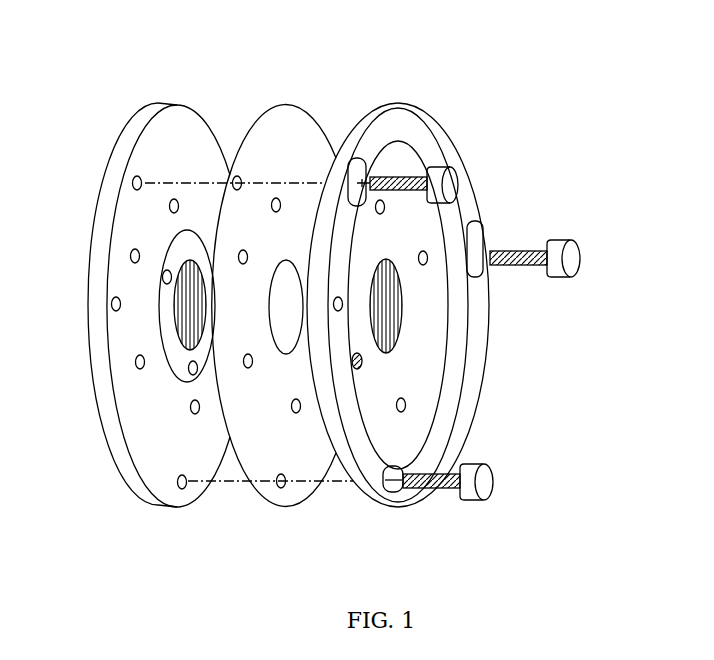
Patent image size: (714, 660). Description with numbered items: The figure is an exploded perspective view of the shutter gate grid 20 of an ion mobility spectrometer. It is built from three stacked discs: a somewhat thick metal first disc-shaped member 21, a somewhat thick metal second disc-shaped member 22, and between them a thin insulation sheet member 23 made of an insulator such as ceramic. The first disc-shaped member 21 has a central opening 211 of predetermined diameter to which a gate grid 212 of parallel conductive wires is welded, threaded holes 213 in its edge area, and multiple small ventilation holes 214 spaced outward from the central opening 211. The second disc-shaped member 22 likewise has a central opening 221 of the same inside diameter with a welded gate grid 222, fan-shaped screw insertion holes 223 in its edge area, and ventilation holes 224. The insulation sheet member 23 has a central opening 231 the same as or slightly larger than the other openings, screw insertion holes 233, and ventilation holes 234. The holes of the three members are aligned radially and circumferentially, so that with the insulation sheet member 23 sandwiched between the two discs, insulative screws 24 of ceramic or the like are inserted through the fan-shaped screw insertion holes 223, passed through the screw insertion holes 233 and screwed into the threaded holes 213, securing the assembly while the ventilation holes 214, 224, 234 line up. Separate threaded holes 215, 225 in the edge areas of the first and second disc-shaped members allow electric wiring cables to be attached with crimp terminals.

The shutter gate grid 20 is at (572, 91).
The first disc-shaped member 21 is at (147, 117).
The central opening 211 is at (174, 298).
The gate grid 212 is at (173, 317).
The threaded holes 213 is at (133, 181).
The ventilation holes 214 is at (137, 368).
The threaded hole for electric wiring 215 is at (111, 305).
The second disc-shaped member 22 is at (448, 127).
The central opening 221 is at (405, 292).
The gate grid 222 is at (403, 303).
The fan-shaped screw insertion holes 223 is at (362, 160).
The ventilation holes 224 is at (408, 406).
The threaded hole for electric wiring 225 is at (345, 310).
The insulation sheet member 23 is at (268, 117).
The central opening 231 is at (278, 356).
The screw insertion holes 233 is at (230, 163).
The ventilation holes 234 is at (297, 414).
The insulative screws 24 is at (455, 173).